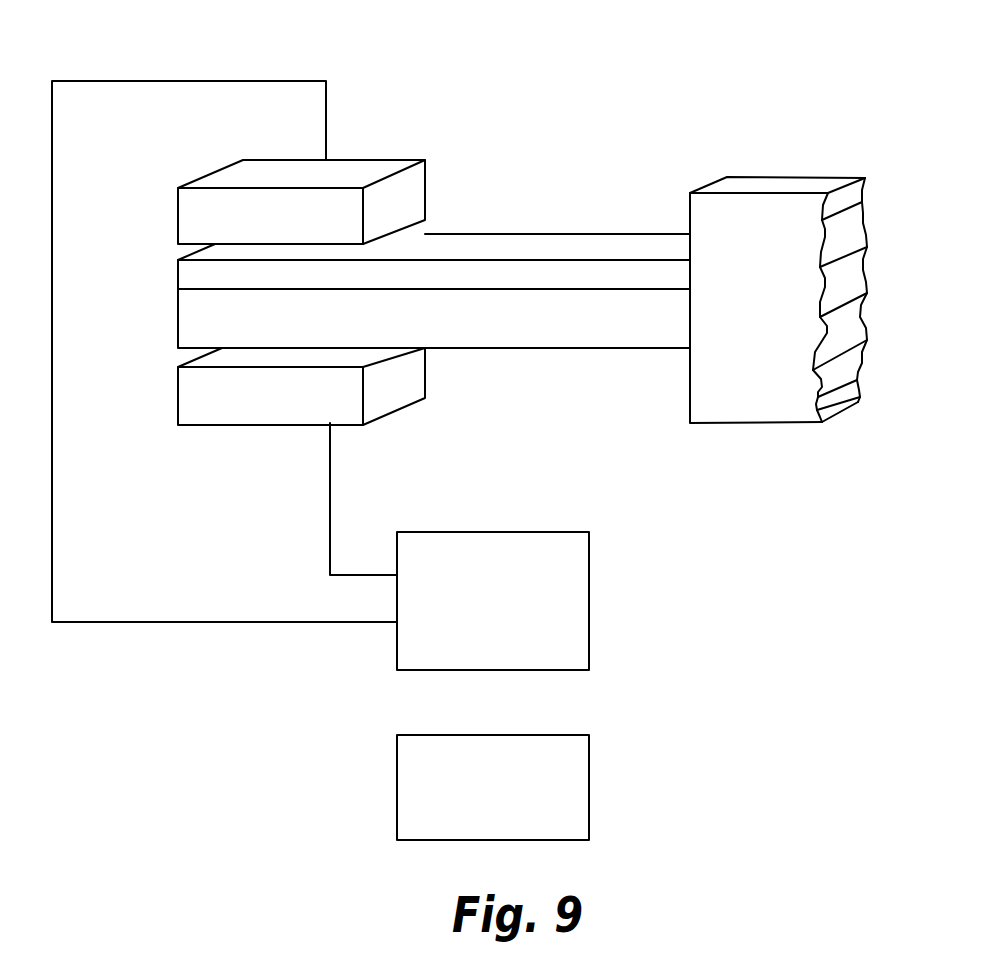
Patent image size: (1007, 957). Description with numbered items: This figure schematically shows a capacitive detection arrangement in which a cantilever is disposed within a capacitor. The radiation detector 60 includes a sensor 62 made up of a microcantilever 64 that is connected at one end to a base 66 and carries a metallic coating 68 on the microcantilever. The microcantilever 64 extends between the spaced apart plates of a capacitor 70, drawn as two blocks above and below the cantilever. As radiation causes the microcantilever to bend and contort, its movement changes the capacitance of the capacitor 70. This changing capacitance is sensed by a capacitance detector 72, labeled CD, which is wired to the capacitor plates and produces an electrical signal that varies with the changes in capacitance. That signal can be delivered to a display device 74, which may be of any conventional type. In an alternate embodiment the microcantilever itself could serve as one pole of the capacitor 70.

The radiation detector 60 is at (696, 70).
The sensor 62 is at (598, 420).
The microcantilever 64 is at (160, 325).
The base 66 is at (785, 183).
The metallic coating 68 is at (546, 238).
The capacitor 70 is at (381, 136).
The capacitance detector 72 is at (589, 562).
The display device 74 is at (589, 753).